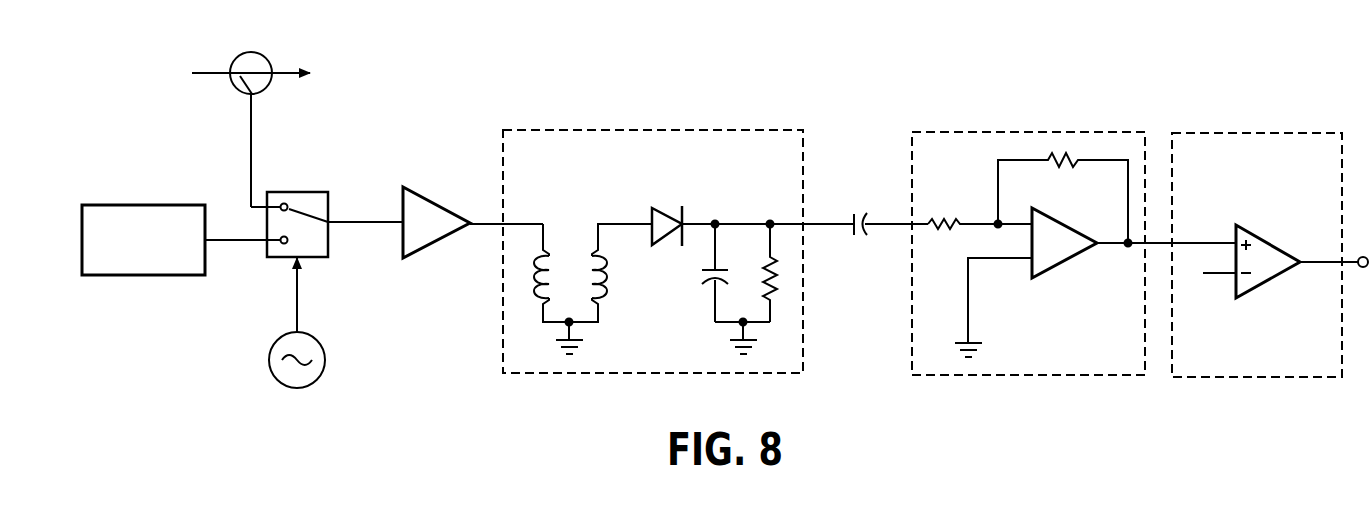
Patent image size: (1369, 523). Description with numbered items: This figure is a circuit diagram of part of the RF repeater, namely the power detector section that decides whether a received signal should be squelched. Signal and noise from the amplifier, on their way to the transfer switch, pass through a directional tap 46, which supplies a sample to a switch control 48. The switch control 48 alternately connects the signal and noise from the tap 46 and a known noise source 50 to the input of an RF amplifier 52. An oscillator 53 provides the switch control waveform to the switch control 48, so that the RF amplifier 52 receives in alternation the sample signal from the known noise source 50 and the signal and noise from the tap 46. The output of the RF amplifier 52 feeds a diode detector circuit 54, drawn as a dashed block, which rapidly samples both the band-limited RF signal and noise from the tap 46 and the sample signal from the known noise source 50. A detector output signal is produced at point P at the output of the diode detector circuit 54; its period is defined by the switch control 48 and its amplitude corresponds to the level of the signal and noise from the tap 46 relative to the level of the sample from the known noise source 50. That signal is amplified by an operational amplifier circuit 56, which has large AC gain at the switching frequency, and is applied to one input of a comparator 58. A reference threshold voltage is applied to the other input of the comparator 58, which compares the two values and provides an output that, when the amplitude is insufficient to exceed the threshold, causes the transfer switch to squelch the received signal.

The directional tap 46 is at (262, 55).
The switch control 48 is at (330, 242).
The known noise source 50 is at (165, 280).
The RF amplifier 52 is at (443, 243).
The oscillator 53 is at (325, 358).
The diode detector circuit 54 is at (600, 383).
The operational amplifier circuit 56 is at (1005, 383).
The comparator 58 is at (1268, 279).
The point P is at (887, 229).